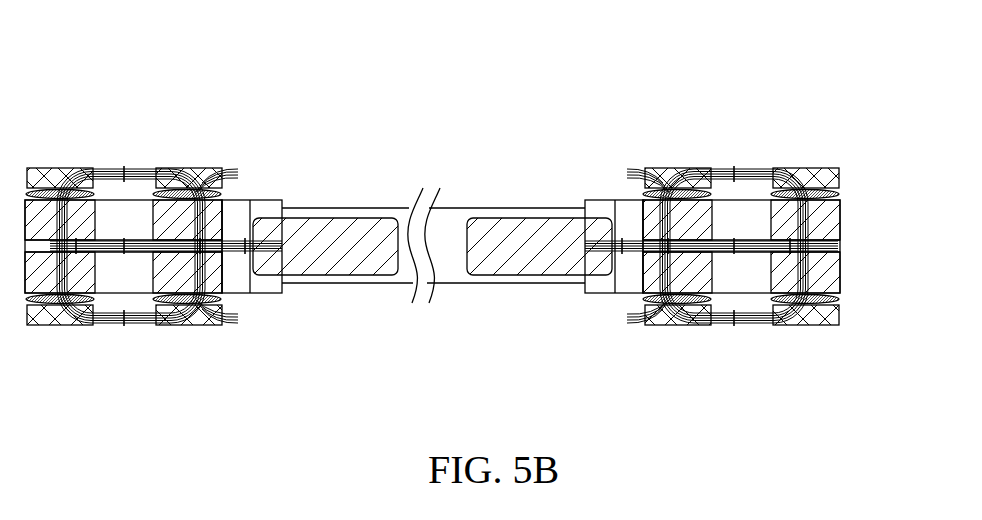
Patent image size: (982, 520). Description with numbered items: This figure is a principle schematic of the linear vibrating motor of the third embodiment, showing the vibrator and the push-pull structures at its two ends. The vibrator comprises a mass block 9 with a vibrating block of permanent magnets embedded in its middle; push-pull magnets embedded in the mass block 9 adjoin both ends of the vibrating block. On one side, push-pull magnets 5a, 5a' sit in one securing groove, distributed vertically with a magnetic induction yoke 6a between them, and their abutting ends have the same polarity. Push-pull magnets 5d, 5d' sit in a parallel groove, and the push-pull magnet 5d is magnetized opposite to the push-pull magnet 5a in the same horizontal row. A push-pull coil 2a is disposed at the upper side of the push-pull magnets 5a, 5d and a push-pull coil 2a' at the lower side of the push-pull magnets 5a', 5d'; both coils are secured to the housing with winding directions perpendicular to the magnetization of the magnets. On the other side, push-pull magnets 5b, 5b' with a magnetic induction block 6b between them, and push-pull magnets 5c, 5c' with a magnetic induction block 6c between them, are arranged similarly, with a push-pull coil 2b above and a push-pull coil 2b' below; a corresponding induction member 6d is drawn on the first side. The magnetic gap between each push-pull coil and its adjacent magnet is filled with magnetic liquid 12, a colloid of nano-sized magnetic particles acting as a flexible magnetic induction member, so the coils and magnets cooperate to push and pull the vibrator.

The push-pull coil 2a is at (764, 112).
The push-pull coil 2a' is at (742, 347).
The push-pull coil 2b is at (149, 100).
The push-pull coil 2b' is at (157, 356).
The push-pull magnet 5a is at (853, 174).
The push-pull magnet 5a' is at (856, 306).
The push-pull magnet 5b is at (71, 126).
The push-pull magnet 5b' is at (89, 328).
The push-pull magnet 5c is at (247, 145).
The push-pull magnet 5c' is at (275, 331).
The push-pull magnet 5d is at (686, 144).
The push-pull magnet 5d' is at (626, 313).
The magnetic induction yoke 6a is at (837, 250).
The magnetic induction block 6b is at (83, 182).
The magnetic induction block 6c is at (240, 200).
The fourth magnetic yoke 6d is at (702, 192).
The mass block 9 is at (433, 208).
The magnetic liquid 12 is at (645, 175).